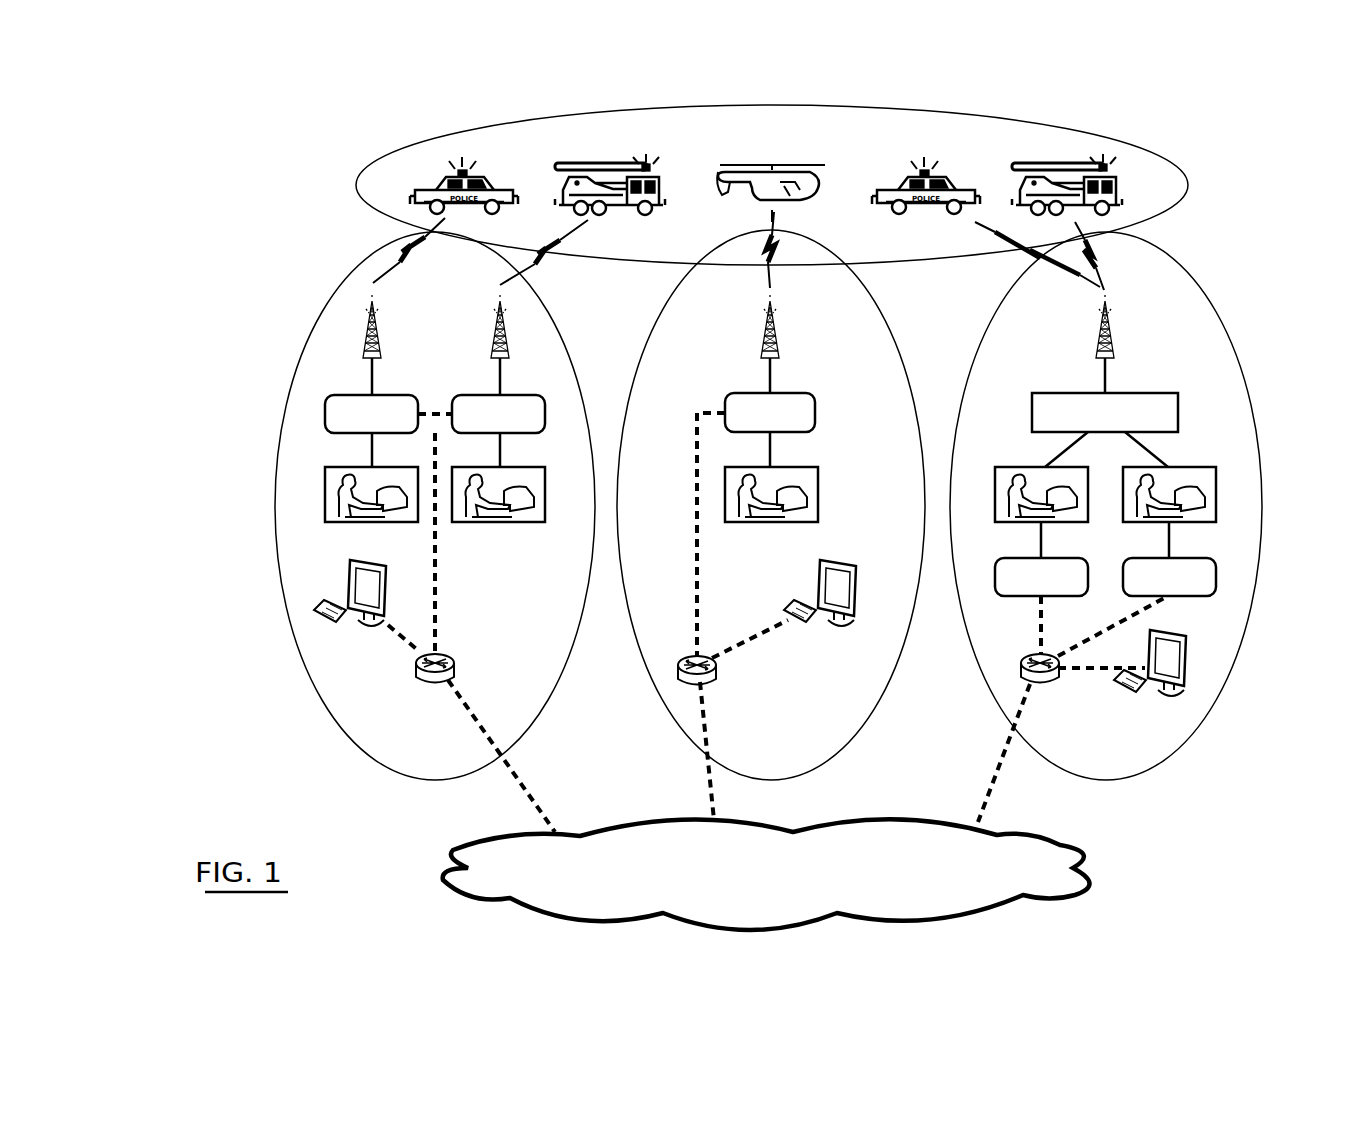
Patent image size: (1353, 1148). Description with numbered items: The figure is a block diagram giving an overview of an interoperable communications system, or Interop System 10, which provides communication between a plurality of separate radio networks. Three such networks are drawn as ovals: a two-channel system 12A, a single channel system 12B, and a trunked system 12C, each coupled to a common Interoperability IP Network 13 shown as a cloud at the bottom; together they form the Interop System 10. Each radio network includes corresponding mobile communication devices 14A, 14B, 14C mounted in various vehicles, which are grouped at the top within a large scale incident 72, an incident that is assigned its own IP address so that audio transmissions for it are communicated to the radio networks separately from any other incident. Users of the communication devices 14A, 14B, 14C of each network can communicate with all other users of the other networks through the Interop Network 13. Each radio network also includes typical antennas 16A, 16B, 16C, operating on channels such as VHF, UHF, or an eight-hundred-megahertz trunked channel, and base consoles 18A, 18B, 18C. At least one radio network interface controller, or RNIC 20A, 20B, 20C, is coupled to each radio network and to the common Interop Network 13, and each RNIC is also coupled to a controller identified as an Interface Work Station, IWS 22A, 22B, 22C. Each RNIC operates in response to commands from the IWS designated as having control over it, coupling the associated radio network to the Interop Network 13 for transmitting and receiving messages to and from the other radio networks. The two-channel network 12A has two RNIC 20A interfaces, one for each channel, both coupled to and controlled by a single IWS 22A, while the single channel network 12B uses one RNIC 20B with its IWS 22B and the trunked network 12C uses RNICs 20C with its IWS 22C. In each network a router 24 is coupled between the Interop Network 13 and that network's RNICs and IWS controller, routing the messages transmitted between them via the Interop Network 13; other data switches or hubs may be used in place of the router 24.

The interoperable communications system 10 is at (312, 210).
The two-channel radio network 12A is at (253, 497).
The single channel radio network 12B is at (650, 726).
The trunked radio network 12C is at (983, 709).
The Interoperability IP Network 13 is at (1060, 852).
The mobile communication devices 14A is at (455, 135).
The mobile communication device 14B is at (818, 190).
The mobile communication devices 14C is at (955, 172).
The antennas 16A is at (383, 346).
The antenna 16B is at (780, 345).
The antenna 16C is at (1116, 335).
The base consoles 18A is at (532, 467).
The base console 18B is at (815, 482).
The base consoles 18C is at (996, 467).
The radio network interface controllers 20A is at (392, 395).
The radio network interface controller 20B is at (812, 420).
The radio network interface controllers 20C is at (1000, 565).
The Interface Work Station controller 22A is at (372, 626).
The Interface Work Station controller 22B is at (842, 560).
The Interface Work Station controller 22C is at (1186, 652).
The router 24 is at (455, 665).
The incident 72 is at (935, 125).